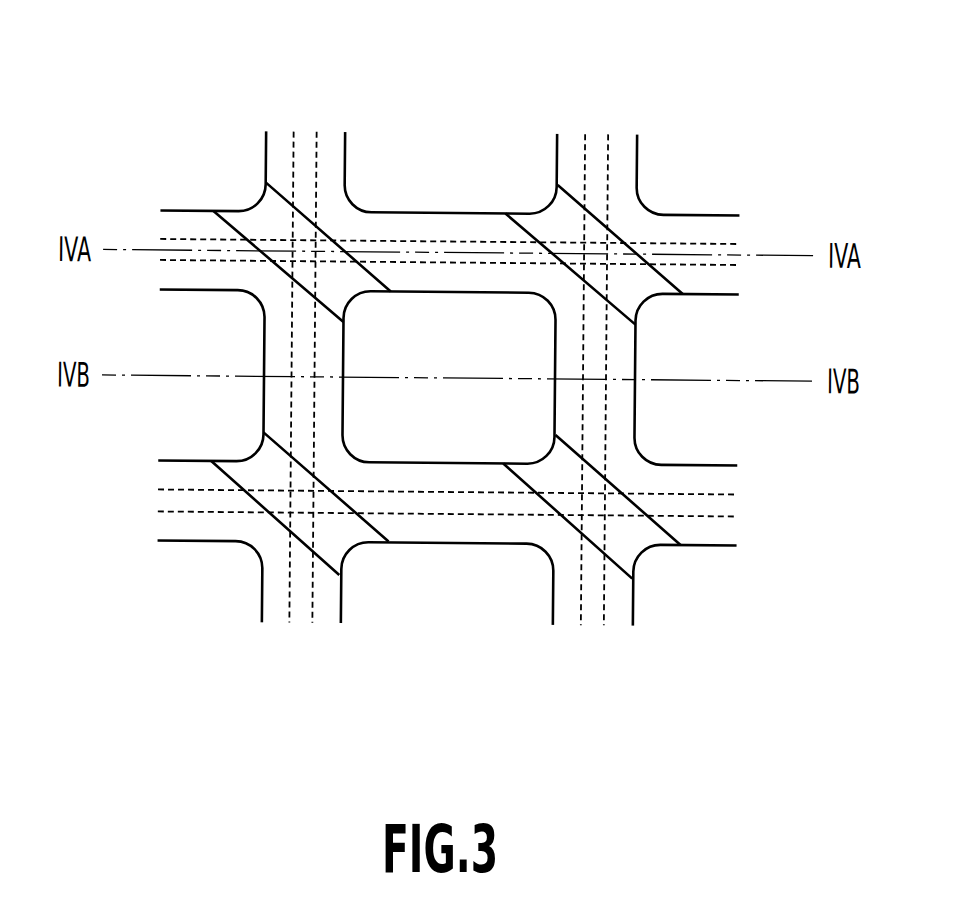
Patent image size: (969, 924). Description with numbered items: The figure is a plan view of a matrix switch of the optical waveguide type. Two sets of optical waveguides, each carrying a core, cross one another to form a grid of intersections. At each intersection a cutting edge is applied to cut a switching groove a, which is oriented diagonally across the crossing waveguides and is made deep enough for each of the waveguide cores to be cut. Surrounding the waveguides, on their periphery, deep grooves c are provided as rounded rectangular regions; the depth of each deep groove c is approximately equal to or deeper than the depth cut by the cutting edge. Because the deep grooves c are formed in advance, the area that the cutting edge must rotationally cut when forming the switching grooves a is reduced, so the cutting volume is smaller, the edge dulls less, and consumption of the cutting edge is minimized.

The switching groove a is at (268, 218).
The deep groove c is at (455, 140).